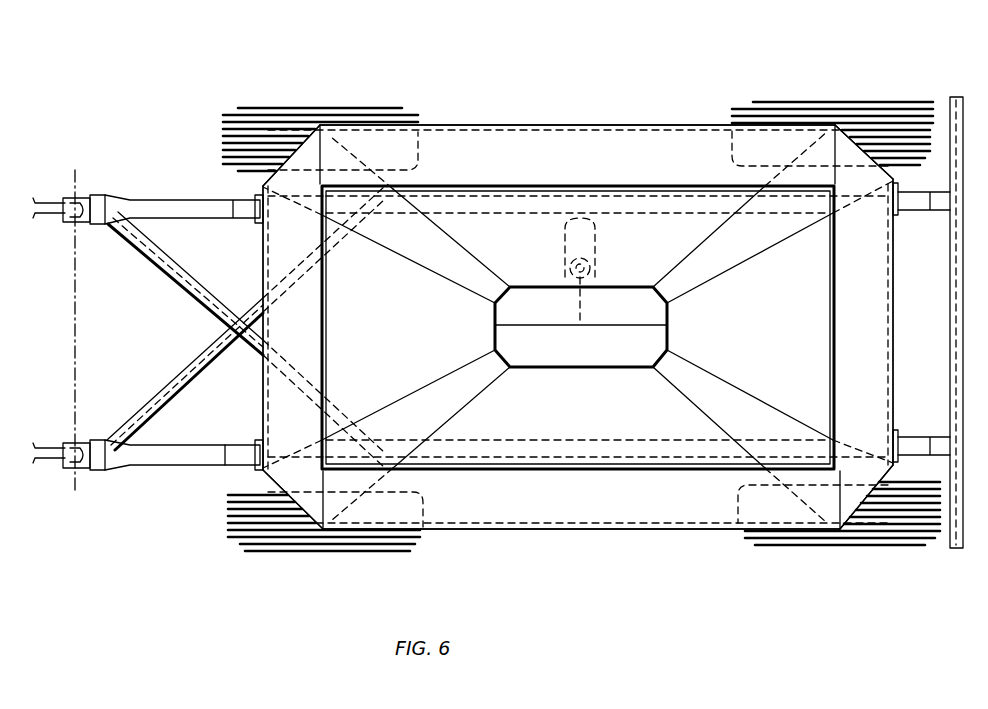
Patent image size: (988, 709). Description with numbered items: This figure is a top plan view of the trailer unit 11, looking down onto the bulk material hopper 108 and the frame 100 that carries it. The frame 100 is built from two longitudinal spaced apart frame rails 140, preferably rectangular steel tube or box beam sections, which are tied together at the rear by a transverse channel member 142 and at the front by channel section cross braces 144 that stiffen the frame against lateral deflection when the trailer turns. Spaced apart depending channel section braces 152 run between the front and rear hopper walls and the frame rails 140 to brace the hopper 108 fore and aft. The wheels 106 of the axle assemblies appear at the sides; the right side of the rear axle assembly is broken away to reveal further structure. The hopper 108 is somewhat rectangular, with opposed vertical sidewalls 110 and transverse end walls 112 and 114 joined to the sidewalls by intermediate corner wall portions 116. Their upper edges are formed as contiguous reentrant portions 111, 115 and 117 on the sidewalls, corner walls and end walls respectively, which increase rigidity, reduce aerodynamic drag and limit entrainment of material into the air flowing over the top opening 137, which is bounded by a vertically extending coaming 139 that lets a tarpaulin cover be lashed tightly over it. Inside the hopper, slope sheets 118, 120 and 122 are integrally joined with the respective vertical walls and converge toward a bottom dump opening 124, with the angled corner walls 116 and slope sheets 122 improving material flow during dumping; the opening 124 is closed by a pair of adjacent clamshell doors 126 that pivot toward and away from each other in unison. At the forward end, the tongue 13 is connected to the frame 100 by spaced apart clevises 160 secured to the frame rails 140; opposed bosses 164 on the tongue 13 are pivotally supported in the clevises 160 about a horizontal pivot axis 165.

The trailer unit 11 is at (536, 100).
The tongue 13 is at (48, 472).
The frame 100 is at (200, 478).
The wheels 106 is at (372, 107).
The bulk material hopper 108 is at (620, 124).
The vertical sidewalls 110 is at (510, 124).
The reentrant portions of upper sidewalls 111 is at (680, 140).
The transverse end wall 112 is at (262, 257).
The transverse end wall 114 is at (898, 258).
The reentrant portions of corner walls 115 is at (298, 160).
The intermediate corner wall portions 116 is at (275, 165).
The reentrant portions of end walls 117 is at (313, 341).
The slope sheet 118 is at (640, 254).
The slope sheet 120 is at (475, 332).
The slope sheet 122 is at (445, 254).
The bottom dump opening 124 is at (538, 368).
The clamshell doors 126 is at (660, 326).
The top opening 137 is at (568, 468).
The coaming 139 is at (575, 180).
The frame rails 140 is at (198, 198).
The transverse channel member 142 is at (957, 550).
The cross braces 144 is at (130, 255).
The channel section braces 152 is at (232, 210).
The clevises 160 is at (70, 224).
The bosses 164 is at (70, 198).
The horizontal pivot axis 165 is at (74, 345).